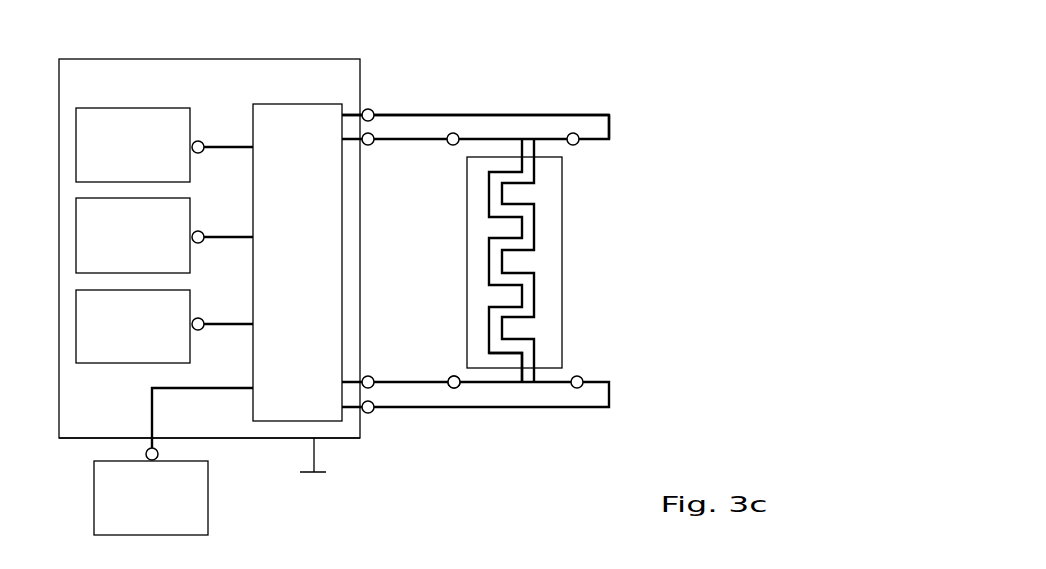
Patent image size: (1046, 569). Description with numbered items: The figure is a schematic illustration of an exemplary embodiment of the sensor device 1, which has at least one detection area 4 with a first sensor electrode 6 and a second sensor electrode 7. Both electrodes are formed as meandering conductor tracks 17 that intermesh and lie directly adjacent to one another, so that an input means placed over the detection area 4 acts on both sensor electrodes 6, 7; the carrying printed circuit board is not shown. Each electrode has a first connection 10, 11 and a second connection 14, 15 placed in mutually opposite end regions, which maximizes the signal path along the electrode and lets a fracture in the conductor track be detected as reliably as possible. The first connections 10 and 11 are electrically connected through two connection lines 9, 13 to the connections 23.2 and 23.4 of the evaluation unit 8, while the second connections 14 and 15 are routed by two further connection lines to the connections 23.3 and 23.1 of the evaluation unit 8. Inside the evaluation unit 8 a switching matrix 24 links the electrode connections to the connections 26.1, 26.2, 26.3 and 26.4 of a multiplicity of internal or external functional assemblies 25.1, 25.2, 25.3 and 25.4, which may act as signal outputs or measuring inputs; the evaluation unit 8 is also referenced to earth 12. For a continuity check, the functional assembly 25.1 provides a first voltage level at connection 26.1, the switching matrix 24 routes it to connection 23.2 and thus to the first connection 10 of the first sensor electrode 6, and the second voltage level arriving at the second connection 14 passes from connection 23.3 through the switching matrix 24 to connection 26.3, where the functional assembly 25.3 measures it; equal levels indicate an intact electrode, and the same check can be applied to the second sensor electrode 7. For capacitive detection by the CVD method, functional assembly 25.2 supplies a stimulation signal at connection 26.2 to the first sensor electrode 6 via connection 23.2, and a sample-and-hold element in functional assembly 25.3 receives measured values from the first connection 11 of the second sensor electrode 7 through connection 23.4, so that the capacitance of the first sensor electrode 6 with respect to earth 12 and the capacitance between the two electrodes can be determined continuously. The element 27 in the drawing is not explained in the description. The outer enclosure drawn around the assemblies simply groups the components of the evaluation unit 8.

The sensor device 1 is at (658, 122).
The detection area 4 is at (568, 265).
The first sensor electrode 6 is at (482, 260).
The second sensor electrode 7 is at (542, 213).
The evaluation unit 8 is at (250, 430).
The connection line 9 is at (435, 137).
The first connection 10 is at (470, 128).
The first connection 11 is at (580, 390).
The earth 12 is at (325, 483).
The connection line 13 is at (600, 107).
The second connection 14 is at (455, 390).
The second connection 15 is at (568, 127).
The conductor tracks 17 is at (523, 357).
The connection 23.1 is at (378, 100).
The connection 23.2 is at (370, 152).
The connection 23.3 is at (370, 365).
The connection 23.4 is at (373, 412).
The switching matrix 24 is at (297, 262).
The internal or external functional assembly 25.1 is at (133, 145).
The internal or external functional assembly 25.2 is at (133, 235).
The internal or external functional assembly 25.3 is at (133, 326).
The internal or external functional assembly 25.4 is at (151, 498).
The connection 26.1 is at (220, 140).
The connection 26.2 is at (220, 230).
The connection 26.3 is at (220, 317).
The connection 26.4 is at (147, 445).
The control device 27 is at (77, 332).